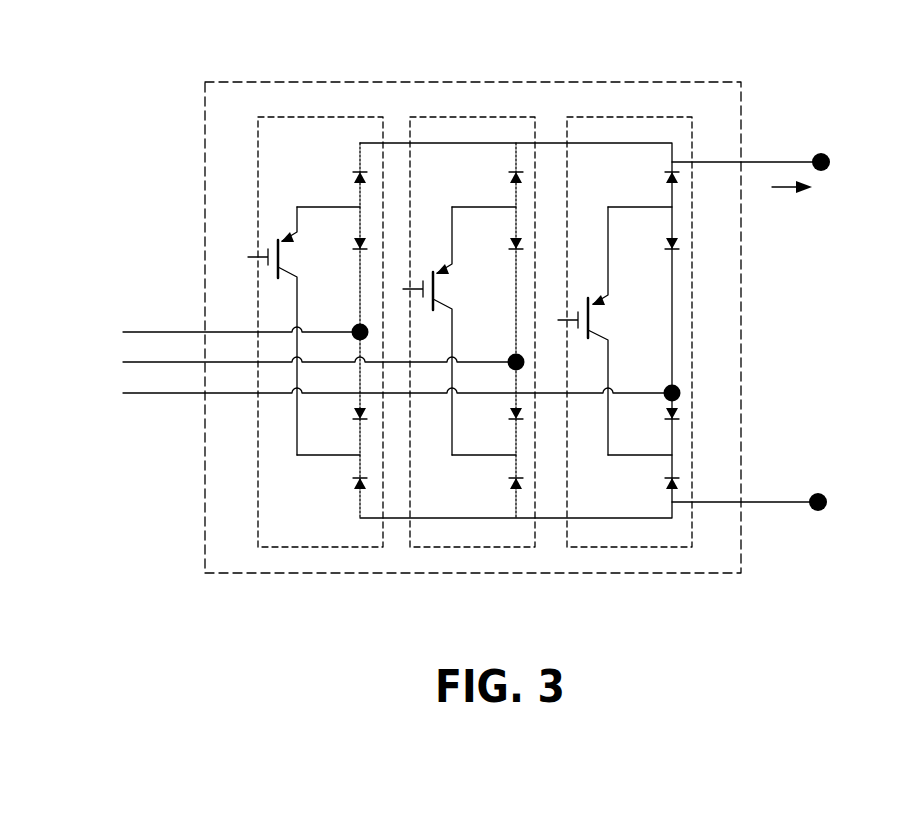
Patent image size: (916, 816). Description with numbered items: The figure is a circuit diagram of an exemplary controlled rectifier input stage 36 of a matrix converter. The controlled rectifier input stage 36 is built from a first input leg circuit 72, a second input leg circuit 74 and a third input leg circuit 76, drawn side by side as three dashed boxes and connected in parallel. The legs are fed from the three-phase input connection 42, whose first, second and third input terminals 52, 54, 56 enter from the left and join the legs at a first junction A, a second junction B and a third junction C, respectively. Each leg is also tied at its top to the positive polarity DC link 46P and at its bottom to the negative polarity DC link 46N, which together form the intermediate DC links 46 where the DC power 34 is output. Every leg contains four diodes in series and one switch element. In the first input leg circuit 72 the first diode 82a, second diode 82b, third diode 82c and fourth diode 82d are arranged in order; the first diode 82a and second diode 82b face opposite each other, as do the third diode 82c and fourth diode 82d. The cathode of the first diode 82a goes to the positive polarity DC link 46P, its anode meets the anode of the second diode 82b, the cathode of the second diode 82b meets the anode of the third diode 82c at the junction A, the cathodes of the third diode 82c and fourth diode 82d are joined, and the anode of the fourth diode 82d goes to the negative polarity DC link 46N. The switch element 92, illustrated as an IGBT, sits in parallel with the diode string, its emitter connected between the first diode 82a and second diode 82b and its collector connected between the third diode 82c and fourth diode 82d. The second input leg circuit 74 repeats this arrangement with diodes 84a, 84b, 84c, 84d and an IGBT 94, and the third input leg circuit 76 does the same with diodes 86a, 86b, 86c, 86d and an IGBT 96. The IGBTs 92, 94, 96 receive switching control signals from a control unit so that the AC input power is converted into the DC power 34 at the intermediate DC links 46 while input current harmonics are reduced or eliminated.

The DC power 34 is at (798, 192).
The controlled rectifier input stage 36 is at (670, 82).
The three-phase input connection 42 is at (110, 280).
The intermediate DC links 46 is at (862, 96).
The positive polarity DC link 46P is at (826, 152).
The negative polarity DC link 46N is at (820, 512).
The first input terminal 52 is at (147, 330).
The second input terminal 54 is at (132, 360).
The third input terminal 56 is at (148, 392).
The first input leg circuit 72 is at (302, 548).
The second input leg circuit 74 is at (440, 548).
The third input leg circuit 76 is at (610, 548).
The first diode 82a is at (357, 172).
The second diode 82b is at (357, 248).
The third diode 82c is at (357, 416).
The fourth diode 82d is at (357, 483).
The first diode of second input leg circuit 84a is at (513, 172).
The second diode of second input leg circuit 84b is at (512, 248).
The third diode of second input leg circuit 84c is at (512, 412).
The fourth diode of second input leg circuit 84d is at (512, 484).
The first diode of third input leg circuit 86a is at (669, 172).
The second diode of third input leg circuit 86b is at (677, 242).
The third diode of third input leg circuit 86c is at (680, 412).
The fourth diode of third input leg circuit 86d is at (668, 484).
The switch element 92 is at (282, 238).
The IGBT of second input leg circuit 94 is at (438, 271).
The IGBT of third input leg circuit 96 is at (596, 302).
The first junction A is at (352, 328).
The second junction B is at (508, 358).
The third junction C is at (664, 390).